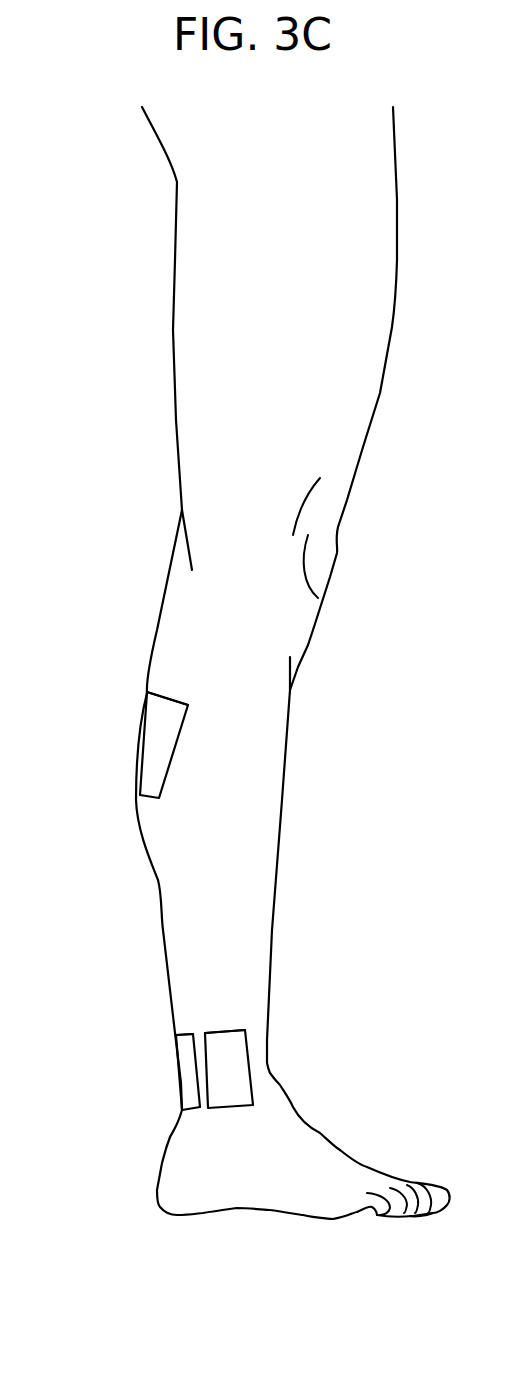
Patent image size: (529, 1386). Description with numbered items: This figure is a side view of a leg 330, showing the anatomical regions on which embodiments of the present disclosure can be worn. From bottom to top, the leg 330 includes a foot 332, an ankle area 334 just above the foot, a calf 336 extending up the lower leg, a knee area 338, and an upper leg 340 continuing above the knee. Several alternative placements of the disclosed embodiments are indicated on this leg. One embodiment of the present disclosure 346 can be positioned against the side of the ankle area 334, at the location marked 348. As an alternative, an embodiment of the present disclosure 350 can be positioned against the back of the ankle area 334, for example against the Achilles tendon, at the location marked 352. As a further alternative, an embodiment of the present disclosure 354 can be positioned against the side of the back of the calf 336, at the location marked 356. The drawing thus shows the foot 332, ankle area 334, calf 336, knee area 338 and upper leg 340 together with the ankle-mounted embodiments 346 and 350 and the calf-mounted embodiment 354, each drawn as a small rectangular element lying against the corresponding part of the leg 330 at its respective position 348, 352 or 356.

The leg 330 is at (112, 449).
The foot 332 is at (390, 1148).
The ankle area 334 is at (305, 1065).
The calf 336 is at (308, 812).
The knee area 338 is at (368, 552).
The upper leg 340 is at (424, 302).
The embodiment of the present disclosure 346 is at (235, 1065).
The side of the ankle area position 348 is at (231, 1020).
The embodiment of the present disclosure 350 is at (188, 1075).
The back of the ankle area position 352 is at (180, 1020).
The embodiment of the present disclosure 354 is at (150, 747).
The side of the back of the calf position 356 is at (156, 681).